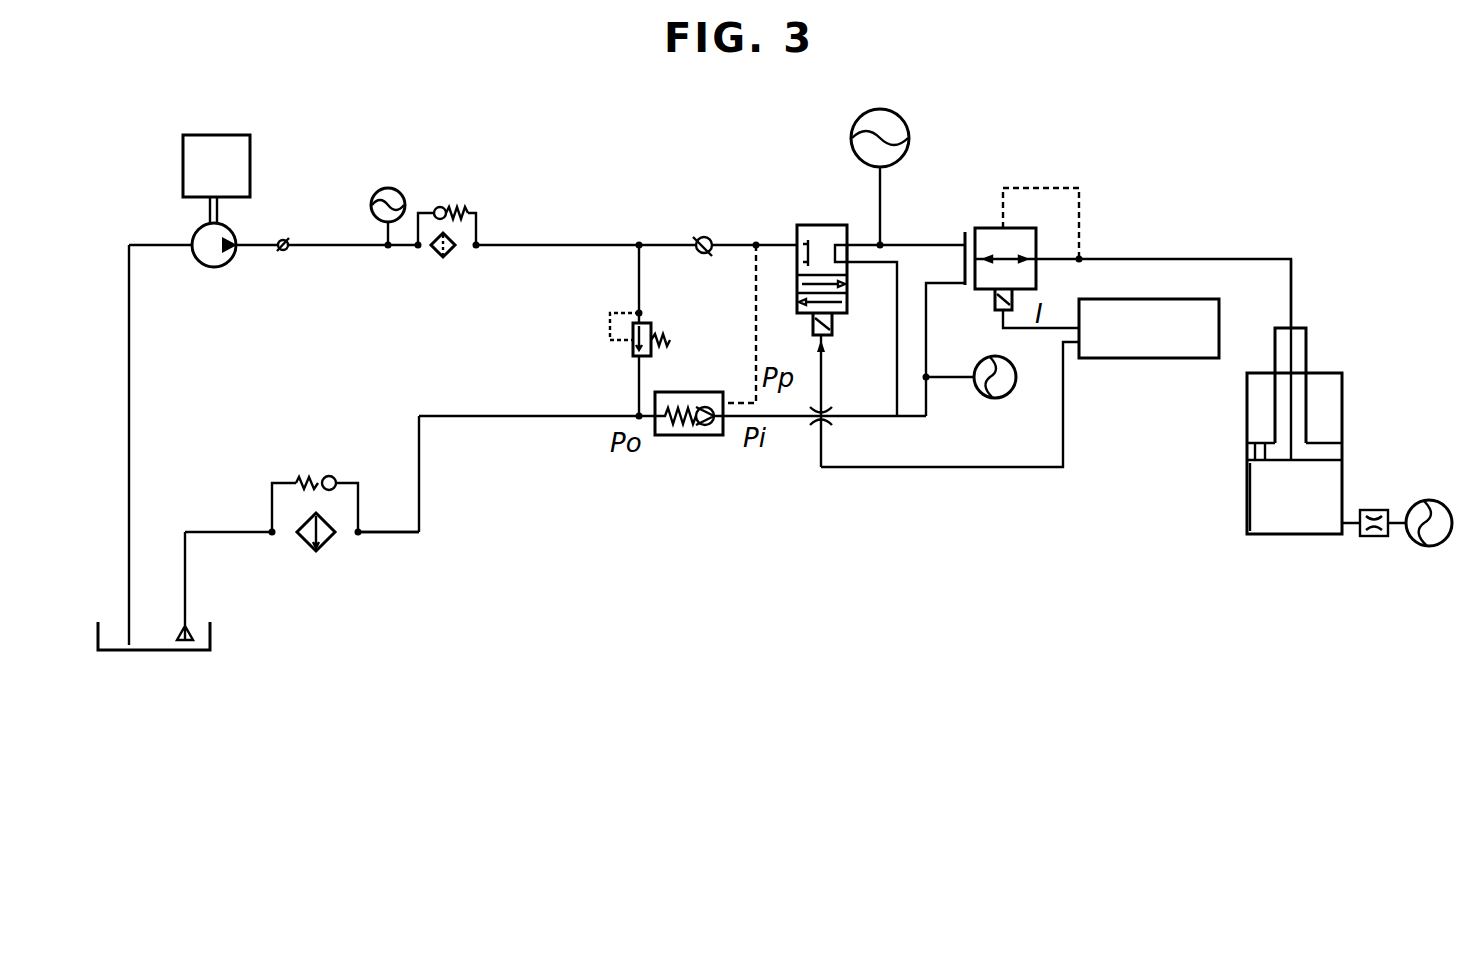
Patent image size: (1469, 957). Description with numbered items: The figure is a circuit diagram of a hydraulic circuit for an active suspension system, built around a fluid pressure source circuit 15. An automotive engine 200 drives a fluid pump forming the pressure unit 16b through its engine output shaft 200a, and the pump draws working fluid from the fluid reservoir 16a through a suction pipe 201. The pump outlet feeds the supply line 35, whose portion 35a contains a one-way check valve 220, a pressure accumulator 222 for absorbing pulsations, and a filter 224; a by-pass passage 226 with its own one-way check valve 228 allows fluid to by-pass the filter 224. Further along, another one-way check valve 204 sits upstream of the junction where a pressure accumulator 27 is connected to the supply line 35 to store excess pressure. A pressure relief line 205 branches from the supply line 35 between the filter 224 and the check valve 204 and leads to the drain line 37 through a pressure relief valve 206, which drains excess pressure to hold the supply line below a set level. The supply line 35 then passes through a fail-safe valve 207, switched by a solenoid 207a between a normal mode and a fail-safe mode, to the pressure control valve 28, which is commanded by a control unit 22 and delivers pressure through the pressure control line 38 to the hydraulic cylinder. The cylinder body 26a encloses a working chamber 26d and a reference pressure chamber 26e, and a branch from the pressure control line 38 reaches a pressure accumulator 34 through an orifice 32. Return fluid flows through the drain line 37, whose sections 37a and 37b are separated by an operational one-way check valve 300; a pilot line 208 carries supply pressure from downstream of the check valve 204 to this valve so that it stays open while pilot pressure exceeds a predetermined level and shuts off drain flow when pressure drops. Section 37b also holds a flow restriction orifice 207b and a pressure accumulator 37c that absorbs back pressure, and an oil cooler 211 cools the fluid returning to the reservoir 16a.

The automotive engine 200 is at (215, 134).
The engine output shaft 200a is at (209, 211).
The pressure unit 16b is at (229, 232).
The fluid reservoir 16a is at (212, 632).
The one-way check valve 220 is at (287, 240).
The pressure accumulator 222 is at (382, 190).
The filter 224 is at (448, 257).
The by-pass passage 226 is at (476, 222).
The one-way check valve 228 is at (441, 206).
The portion of the supply line 35a is at (362, 250).
The supply line 35 is at (593, 248).
The suction pipe 201 is at (132, 389).
The one-way check valve 204 is at (697, 237).
The pressure relief line 205 is at (640, 278).
The pressure relief valve 206 is at (654, 324).
The pilot line 208 is at (755, 268).
The operational one-way check valve 300 is at (700, 391).
The fail-safe valve 207 is at (820, 224).
The solenoid 207a is at (826, 330).
The flow restriction orifice 207b is at (835, 424).
The section of the drain line 37a is at (508, 418).
The drain line 37 is at (568, 418).
The section of the drain line 37b is at (861, 414).
The pressure accumulator 37c is at (1010, 395).
The fluid pressure source circuit 15 is at (436, 470).
The oil cooler 211 is at (312, 552).
The pressure accumulator 27 is at (909, 138).
The pressure control valve 28 is at (983, 227).
The pressure control line 38 is at (1184, 257).
The control unit 22 is at (1220, 316).
The cylinder body 26a is at (1332, 478).
The reference pressure chamber 26e is at (1330, 407).
The working chamber 26d is at (1247, 494).
The orifice 32 is at (1378, 537).
The pressure accumulator 34 is at (1428, 546).